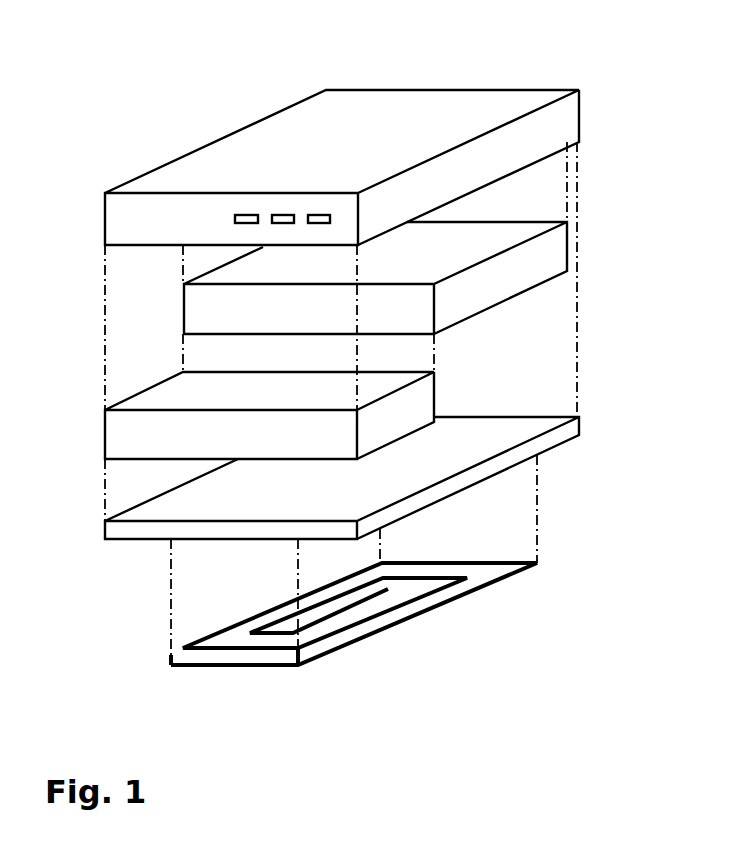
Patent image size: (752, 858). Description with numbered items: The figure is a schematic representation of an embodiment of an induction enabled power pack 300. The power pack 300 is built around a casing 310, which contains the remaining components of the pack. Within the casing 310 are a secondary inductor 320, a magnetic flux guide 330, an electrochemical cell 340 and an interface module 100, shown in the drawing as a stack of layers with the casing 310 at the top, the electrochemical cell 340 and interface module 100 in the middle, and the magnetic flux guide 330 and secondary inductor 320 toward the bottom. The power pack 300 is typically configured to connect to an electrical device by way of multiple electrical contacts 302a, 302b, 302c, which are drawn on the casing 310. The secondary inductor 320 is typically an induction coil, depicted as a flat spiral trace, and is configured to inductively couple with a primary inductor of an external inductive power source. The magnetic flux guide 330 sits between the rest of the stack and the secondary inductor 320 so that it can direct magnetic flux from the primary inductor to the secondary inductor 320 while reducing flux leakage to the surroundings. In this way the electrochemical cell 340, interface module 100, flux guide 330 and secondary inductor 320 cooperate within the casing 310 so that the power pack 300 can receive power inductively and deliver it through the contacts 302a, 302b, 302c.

The induction enabled power pack 300 is at (145, 57).
The casing 310 is at (112, 223).
The electrical contact 302a is at (249, 215).
The electrical contact 302b is at (285, 215).
The electrical contact 302c is at (321, 215).
The electrochemical cell 340 is at (557, 263).
The interface module 100 is at (112, 425).
The magnetic flux guide 330 is at (112, 528).
The secondary inductor 320 is at (378, 617).